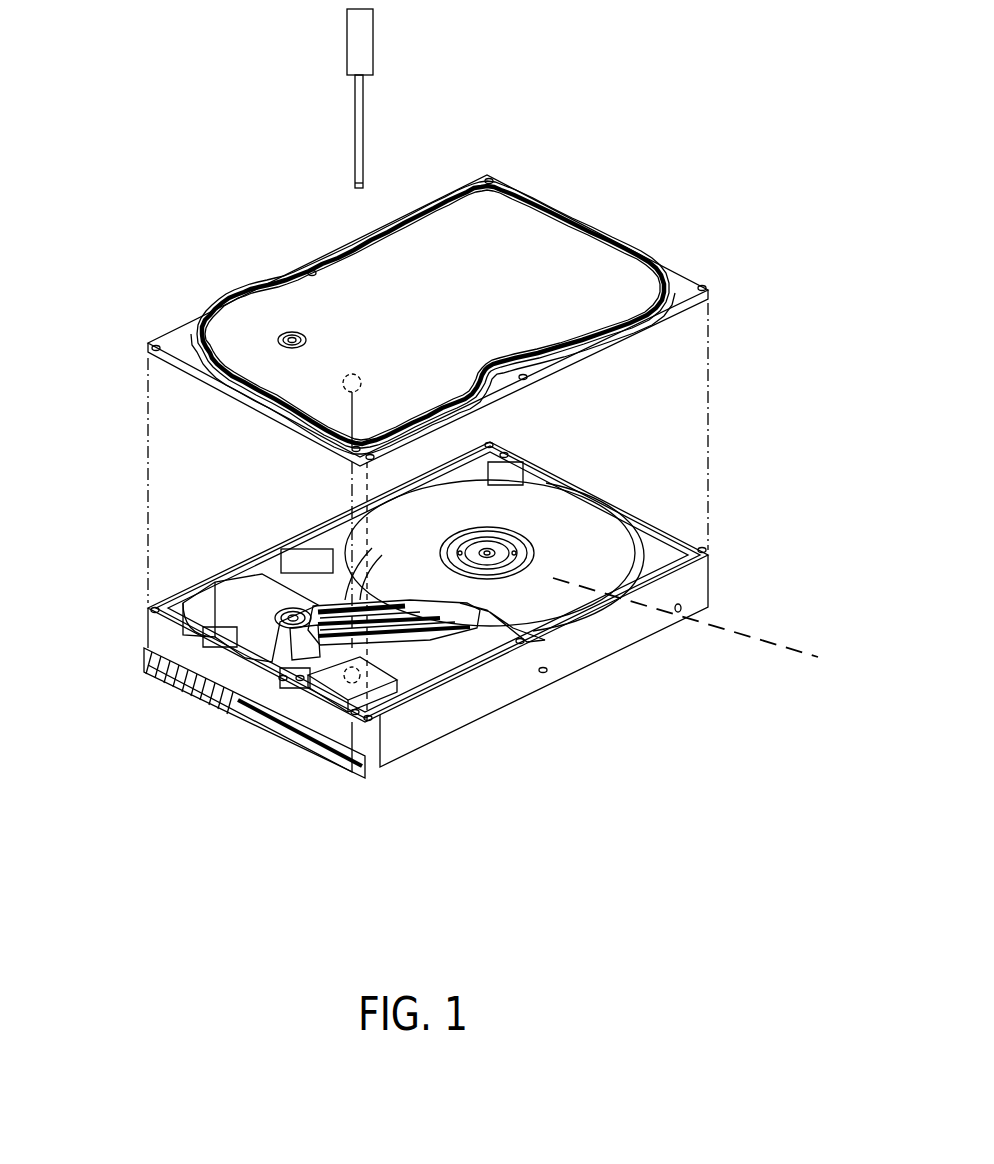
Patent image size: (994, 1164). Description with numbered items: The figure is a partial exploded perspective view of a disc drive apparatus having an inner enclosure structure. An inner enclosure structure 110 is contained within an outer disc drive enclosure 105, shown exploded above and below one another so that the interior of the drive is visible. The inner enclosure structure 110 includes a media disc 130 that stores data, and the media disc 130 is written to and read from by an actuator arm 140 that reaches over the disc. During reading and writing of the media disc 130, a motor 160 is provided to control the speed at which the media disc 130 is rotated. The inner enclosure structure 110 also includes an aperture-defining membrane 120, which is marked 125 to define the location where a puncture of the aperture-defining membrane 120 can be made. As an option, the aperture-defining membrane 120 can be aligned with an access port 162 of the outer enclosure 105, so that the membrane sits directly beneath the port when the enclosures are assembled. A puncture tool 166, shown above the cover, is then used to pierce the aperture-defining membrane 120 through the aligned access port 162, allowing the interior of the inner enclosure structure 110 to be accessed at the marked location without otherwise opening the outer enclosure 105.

The outer disc drive enclosure 105 is at (723, 536).
The inner enclosure structure 110 is at (403, 697).
The aperture-defining membrane 120 is at (323, 688).
The marking 125 is at (340, 652).
The media disc 130 is at (379, 519).
The actuator arm 140 is at (229, 606).
The motor 160 is at (696, 625).
The access port 162 is at (376, 361).
The puncture tool 166 is at (398, 48).